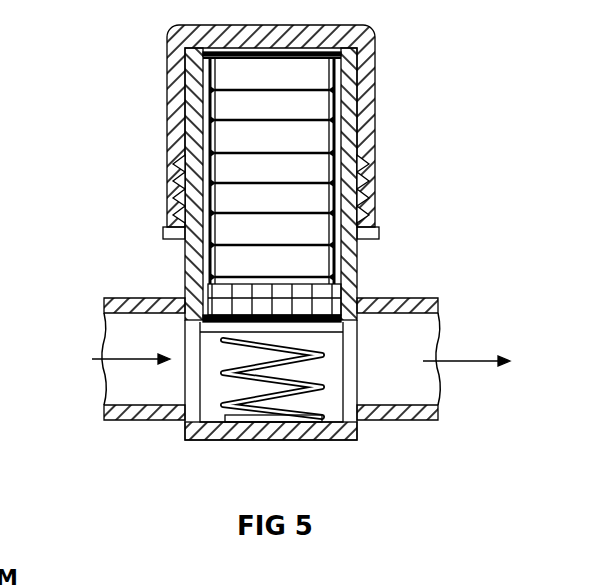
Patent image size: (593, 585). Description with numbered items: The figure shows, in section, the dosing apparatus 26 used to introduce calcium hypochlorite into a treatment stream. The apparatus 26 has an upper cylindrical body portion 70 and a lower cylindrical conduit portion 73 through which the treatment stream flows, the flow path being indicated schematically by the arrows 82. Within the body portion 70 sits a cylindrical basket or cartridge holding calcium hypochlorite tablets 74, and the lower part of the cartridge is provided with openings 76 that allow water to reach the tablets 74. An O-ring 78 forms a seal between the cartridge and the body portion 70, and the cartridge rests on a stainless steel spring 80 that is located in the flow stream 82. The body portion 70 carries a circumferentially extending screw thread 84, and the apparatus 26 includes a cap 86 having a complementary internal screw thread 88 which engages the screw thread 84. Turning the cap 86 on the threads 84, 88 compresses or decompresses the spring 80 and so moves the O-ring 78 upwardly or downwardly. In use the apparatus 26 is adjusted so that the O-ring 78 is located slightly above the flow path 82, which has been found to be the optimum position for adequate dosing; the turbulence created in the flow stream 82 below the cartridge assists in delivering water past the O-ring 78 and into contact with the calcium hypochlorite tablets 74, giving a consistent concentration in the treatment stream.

The apparatus 26 is at (236, 225).
The upper cylindrical body portion 70 is at (352, 258).
The lower cylindrical conduit portion 73 is at (73, 362).
The calcium hypochlorite tablets 74 is at (282, 132).
The openings 76 is at (312, 297).
The O-ring 78 is at (205, 288).
The stainless steel spring 80 is at (318, 387).
The flow stream arrows 82 is at (140, 363).
The screw thread 84 is at (368, 187).
The cap 86 is at (362, 71).
The internal screw thread 88 is at (173, 168).